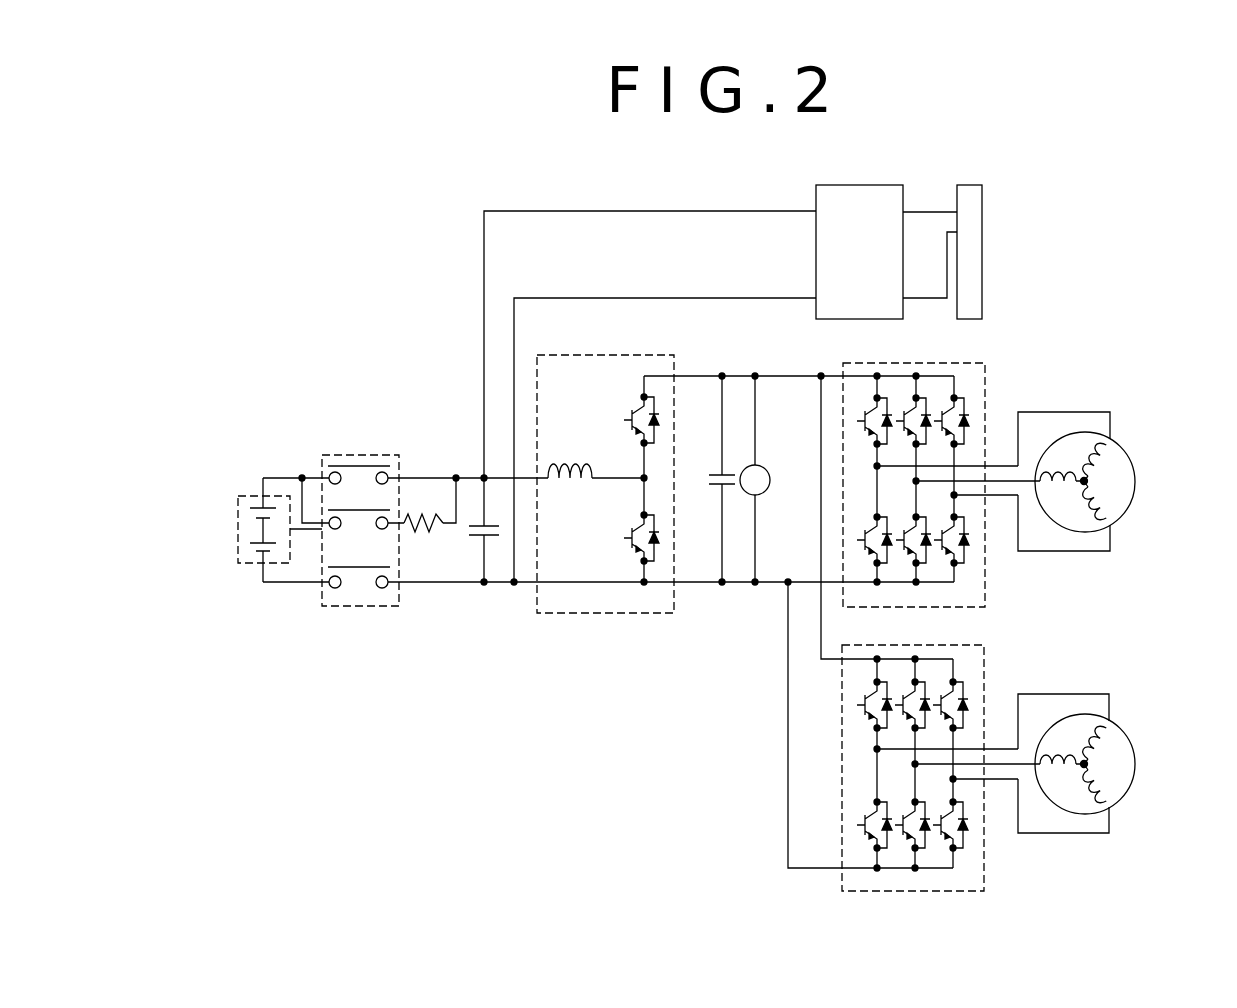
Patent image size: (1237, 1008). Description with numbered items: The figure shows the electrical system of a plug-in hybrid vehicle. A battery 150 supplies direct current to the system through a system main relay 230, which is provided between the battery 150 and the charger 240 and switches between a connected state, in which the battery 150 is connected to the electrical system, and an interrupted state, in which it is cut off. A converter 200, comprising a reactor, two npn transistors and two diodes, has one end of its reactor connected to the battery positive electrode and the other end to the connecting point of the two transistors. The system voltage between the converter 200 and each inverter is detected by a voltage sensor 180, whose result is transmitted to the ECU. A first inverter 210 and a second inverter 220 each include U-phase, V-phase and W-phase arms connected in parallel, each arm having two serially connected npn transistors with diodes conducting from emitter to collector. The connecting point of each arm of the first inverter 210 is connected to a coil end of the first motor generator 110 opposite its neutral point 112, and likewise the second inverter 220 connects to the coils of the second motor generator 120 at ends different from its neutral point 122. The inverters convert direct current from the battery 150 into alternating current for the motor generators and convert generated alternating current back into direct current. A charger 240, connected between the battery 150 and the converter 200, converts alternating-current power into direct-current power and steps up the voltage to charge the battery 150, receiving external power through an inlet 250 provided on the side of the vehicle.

The first motor generator 110 is at (1127, 512).
The neutral point 112 is at (1084, 478).
The second motor generator 120 is at (1127, 794).
The neutral point 122 is at (1084, 762).
The battery 150 is at (248, 494).
The voltage sensor 180 is at (766, 491).
The converter 200 is at (652, 355).
The first inverter 210 is at (985, 566).
The second inverter 220 is at (985, 848).
The system main relay 230 is at (352, 455).
The charger 240 is at (815, 240).
The inlet 250 is at (1010, 259).